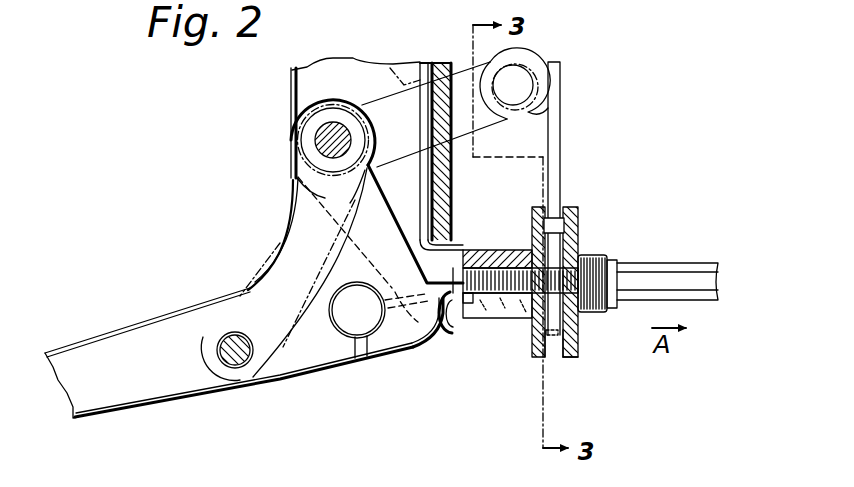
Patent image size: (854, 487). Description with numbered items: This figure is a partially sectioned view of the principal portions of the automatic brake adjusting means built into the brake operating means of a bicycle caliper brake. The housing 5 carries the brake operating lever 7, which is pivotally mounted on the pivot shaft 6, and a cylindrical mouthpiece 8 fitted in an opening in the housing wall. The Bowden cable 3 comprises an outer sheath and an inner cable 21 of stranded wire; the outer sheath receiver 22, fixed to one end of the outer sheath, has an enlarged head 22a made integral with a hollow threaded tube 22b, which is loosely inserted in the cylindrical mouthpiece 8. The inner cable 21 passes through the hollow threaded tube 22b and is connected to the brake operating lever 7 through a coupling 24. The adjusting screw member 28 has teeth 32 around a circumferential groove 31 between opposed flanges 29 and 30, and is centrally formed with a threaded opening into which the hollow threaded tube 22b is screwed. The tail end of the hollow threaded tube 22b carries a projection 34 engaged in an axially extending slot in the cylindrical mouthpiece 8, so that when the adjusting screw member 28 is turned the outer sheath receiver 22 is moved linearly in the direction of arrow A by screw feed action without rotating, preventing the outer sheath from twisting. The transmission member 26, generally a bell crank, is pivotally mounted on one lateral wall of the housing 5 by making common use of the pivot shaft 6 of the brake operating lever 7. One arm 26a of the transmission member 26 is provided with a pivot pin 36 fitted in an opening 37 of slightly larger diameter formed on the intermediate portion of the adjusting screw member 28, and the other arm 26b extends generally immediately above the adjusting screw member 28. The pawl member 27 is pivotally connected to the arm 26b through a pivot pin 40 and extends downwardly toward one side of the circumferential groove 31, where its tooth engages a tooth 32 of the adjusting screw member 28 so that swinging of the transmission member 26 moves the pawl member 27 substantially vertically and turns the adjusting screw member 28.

The Bowden cable 3 is at (663, 262).
The housing 5 is at (290, 90).
The pivot shaft 6 is at (318, 138).
The brake operating lever 7 is at (167, 400).
The cylindrical mouthpiece 8 is at (490, 256).
The inner cable 21 is at (415, 346).
The outer sheath receiver 22 is at (600, 252).
The enlarged head 22a is at (600, 313).
The hollow threaded tube 22b is at (505, 318).
The coupling 24 is at (353, 338).
The transmission member 26 is at (283, 245).
The arm 26a is at (231, 312).
The arm 26b is at (395, 65).
The pawl member 27 is at (563, 122).
The adjusting screw member 28 is at (572, 362).
The flange 29 is at (574, 208).
The flange 30 is at (537, 210).
The circumferential groove 31 is at (549, 350).
The teeth 32 is at (556, 215).
The projection 34 is at (470, 312).
The pivot pin 36 is at (233, 367).
The opening 37 is at (250, 358).
The pivot pin 40 is at (520, 87).